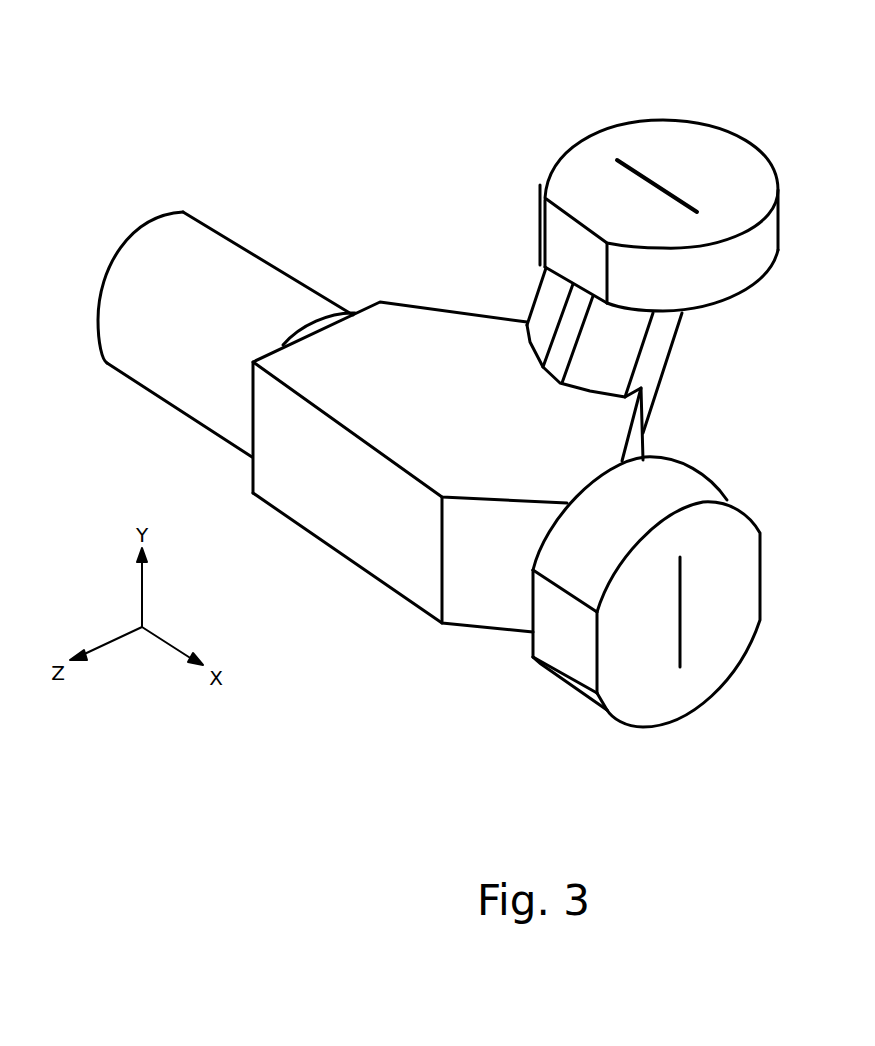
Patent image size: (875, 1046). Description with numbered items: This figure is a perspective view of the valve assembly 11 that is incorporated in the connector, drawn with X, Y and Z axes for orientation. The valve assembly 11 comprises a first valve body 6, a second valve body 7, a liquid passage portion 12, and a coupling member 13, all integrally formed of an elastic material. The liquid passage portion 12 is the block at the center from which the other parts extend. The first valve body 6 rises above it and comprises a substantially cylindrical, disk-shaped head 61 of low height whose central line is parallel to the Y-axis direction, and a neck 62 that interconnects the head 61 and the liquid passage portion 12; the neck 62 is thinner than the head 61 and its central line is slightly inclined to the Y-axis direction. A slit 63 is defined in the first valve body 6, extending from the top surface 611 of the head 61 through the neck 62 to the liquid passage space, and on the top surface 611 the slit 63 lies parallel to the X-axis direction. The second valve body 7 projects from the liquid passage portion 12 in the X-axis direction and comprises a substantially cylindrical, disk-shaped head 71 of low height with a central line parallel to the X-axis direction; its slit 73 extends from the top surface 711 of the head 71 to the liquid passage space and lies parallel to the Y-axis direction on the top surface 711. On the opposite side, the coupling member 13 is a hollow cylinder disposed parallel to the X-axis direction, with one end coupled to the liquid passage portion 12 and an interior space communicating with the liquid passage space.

The valve assembly 11 is at (405, 181).
The liquid passage portion 12 is at (442, 377).
The coupling member 13 is at (226, 276).
The first valve body 6 is at (648, 119).
The head 61 is at (733, 265).
The top surface 611 is at (725, 178).
The neck 62 is at (615, 335).
The slit 63 is at (657, 182).
The second valve body 7 is at (747, 670).
The head 71 is at (660, 493).
The top surface 711 is at (703, 677).
The slit 73 is at (681, 600).